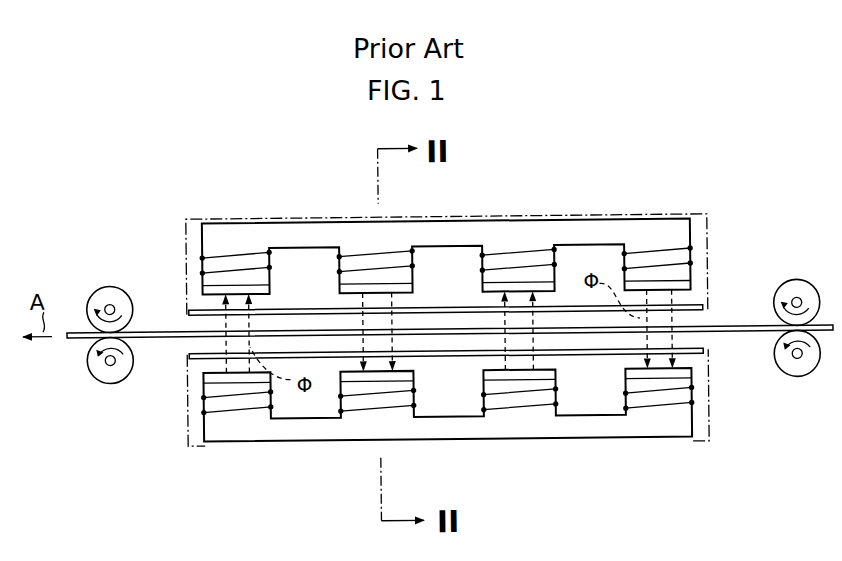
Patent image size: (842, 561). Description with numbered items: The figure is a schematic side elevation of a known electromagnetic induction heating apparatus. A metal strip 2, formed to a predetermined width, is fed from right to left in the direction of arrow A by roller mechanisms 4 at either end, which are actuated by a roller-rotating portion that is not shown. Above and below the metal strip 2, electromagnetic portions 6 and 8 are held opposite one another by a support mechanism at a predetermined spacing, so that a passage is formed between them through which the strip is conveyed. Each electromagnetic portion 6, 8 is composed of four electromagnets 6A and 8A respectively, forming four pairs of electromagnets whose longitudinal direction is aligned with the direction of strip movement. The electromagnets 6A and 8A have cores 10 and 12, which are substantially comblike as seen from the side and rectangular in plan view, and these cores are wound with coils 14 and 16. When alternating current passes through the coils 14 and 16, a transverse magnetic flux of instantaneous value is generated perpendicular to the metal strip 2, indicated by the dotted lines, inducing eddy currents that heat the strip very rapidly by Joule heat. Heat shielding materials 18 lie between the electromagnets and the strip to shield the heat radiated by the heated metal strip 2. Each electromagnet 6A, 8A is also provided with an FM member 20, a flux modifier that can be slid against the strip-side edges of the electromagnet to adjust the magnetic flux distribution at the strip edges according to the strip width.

The metal strip 2 is at (166, 328).
The roller mechanisms 4 is at (93, 371).
The electromagnetic portion 6 is at (485, 213).
The electromagnet 6A is at (370, 247).
The electromagnetic portion 8 is at (340, 446).
The electromagnet 8A is at (236, 419).
The core 10 is at (289, 220).
The core 12 is at (590, 441).
The coil 14 is at (238, 255).
The coil 16 is at (650, 410).
The heat shielding material 18 is at (703, 308).
The FM member 20 is at (484, 286).